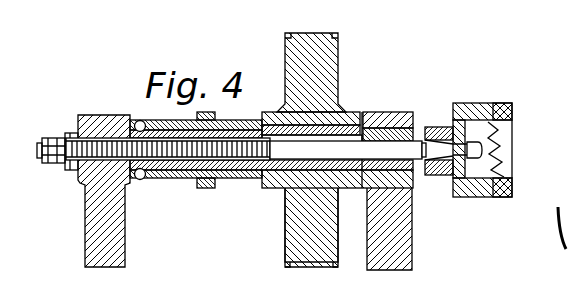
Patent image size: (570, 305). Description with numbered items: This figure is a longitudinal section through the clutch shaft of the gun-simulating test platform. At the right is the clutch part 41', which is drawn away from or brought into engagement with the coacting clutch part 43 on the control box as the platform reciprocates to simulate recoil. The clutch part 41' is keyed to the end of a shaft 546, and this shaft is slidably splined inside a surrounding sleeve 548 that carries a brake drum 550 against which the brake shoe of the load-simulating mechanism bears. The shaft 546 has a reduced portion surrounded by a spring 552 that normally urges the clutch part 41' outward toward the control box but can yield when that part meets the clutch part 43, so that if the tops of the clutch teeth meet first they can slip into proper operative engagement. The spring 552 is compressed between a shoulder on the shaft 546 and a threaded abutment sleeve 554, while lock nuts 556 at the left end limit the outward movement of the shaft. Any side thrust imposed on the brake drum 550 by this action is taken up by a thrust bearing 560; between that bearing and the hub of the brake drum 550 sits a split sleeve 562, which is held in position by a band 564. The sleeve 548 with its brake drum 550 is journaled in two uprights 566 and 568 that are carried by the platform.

The clutch part 41' is at (468, 130).
The clutch part 43 is at (512, 112).
The shaft 546 is at (340, 147).
The sleeve 548 is at (280, 165).
The brake drum 550 is at (332, 42).
The spring 552 is at (233, 140).
The threaded abutment sleeve 554 is at (73, 167).
The lock nuts 556 is at (58, 140).
The thrust bearing 560 is at (137, 180).
The split sleeve 562 is at (160, 123).
The band 564 is at (208, 188).
The upright 566 is at (392, 222).
The upright 568 is at (87, 222).